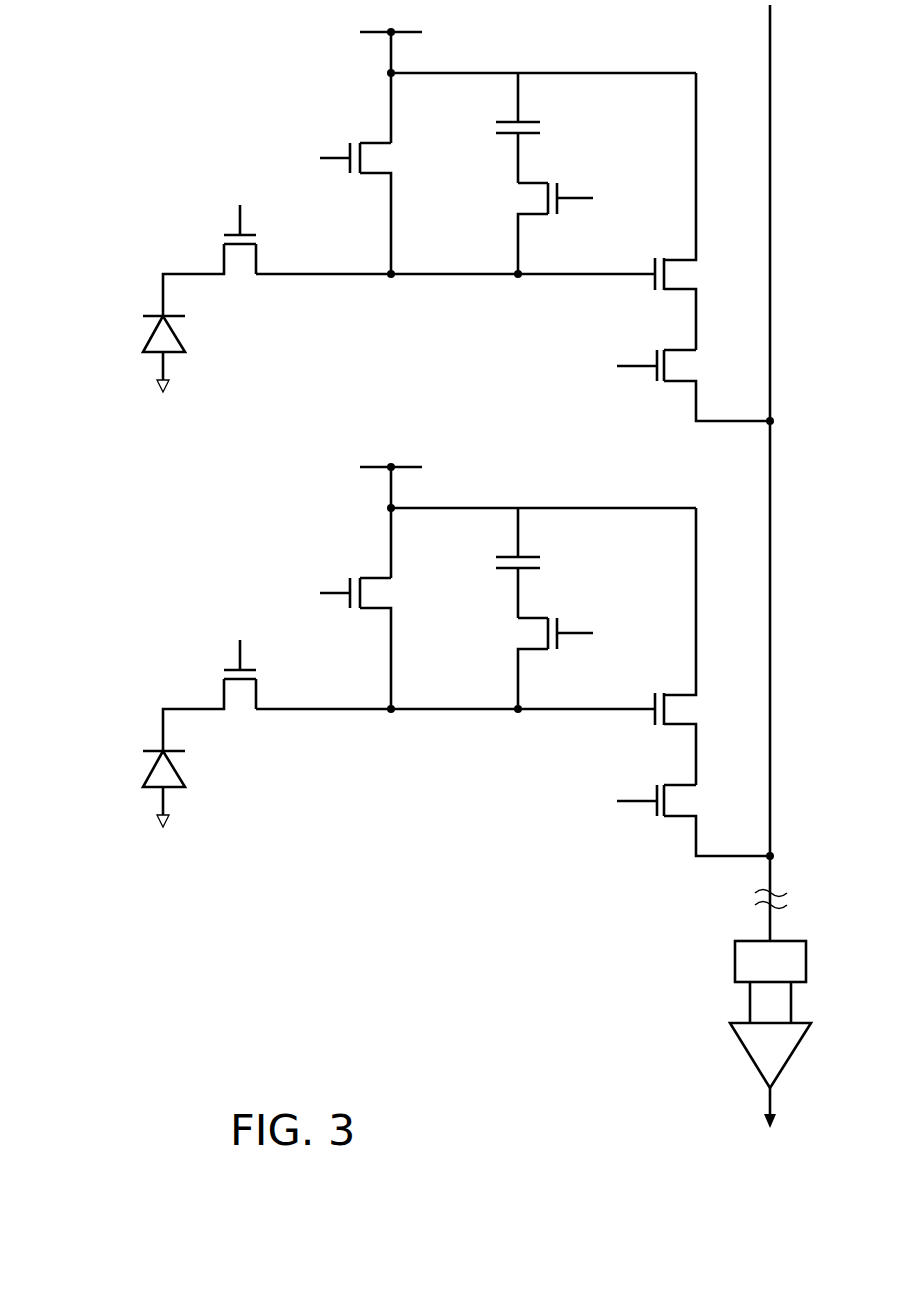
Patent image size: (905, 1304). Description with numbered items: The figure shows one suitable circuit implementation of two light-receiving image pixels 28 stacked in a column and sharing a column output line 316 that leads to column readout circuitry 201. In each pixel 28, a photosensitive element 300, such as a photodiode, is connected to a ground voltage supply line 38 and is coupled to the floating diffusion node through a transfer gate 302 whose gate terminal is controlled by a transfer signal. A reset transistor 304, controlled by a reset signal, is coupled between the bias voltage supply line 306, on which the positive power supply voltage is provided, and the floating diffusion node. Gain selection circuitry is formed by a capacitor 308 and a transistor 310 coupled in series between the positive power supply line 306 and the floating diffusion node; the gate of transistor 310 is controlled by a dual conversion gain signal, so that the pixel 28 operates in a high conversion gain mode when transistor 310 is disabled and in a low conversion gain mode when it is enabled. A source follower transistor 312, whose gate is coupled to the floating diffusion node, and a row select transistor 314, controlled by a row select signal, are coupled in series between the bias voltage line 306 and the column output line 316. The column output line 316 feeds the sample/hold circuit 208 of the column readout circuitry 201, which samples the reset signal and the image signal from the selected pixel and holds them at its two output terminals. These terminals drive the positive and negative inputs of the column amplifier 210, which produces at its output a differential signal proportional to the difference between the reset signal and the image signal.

The pixel 28 is at (62, 17).
The ground voltage supply line 38 is at (158, 385).
The photosensitive element 300 is at (157, 333).
The transfer gate 302 is at (227, 261).
The reset transistor 304 is at (377, 147).
The bias voltage supply line 306 is at (388, 51).
The capacitor 308 is at (543, 128).
The transistor 310 is at (530, 213).
The source follower transistor 312 is at (681, 260).
The row select transistor 314 is at (680, 380).
The column output line 316 is at (772, 548).
The column readout circuitry 201 is at (687, 928).
The sample/hold circuit 208 is at (737, 961).
The column amplifier 210 is at (755, 1058).